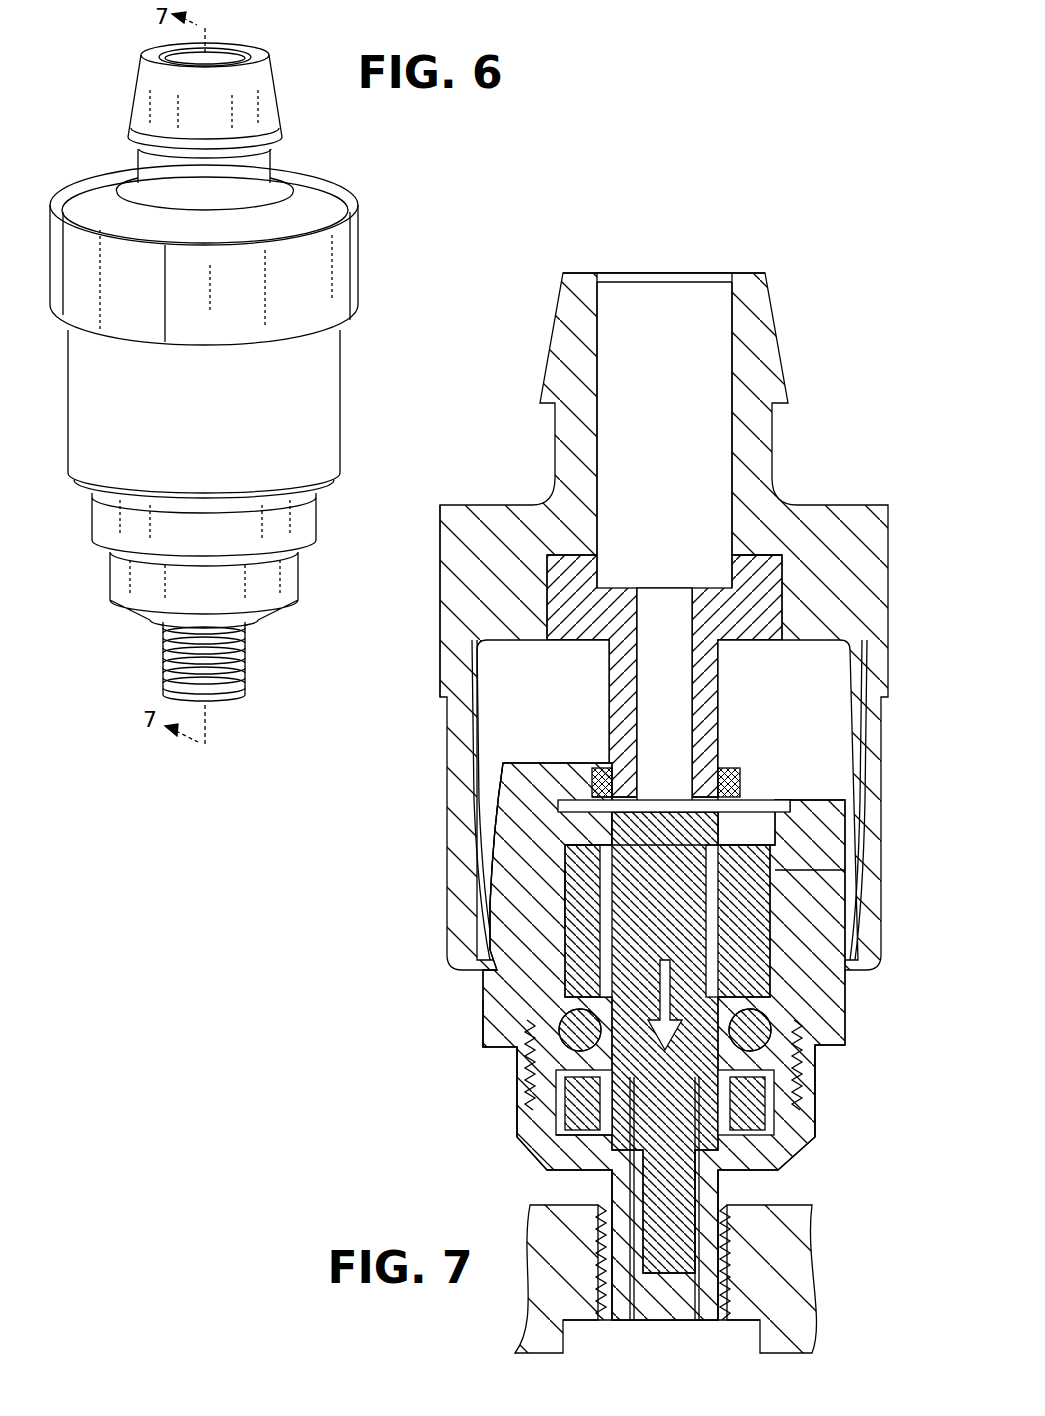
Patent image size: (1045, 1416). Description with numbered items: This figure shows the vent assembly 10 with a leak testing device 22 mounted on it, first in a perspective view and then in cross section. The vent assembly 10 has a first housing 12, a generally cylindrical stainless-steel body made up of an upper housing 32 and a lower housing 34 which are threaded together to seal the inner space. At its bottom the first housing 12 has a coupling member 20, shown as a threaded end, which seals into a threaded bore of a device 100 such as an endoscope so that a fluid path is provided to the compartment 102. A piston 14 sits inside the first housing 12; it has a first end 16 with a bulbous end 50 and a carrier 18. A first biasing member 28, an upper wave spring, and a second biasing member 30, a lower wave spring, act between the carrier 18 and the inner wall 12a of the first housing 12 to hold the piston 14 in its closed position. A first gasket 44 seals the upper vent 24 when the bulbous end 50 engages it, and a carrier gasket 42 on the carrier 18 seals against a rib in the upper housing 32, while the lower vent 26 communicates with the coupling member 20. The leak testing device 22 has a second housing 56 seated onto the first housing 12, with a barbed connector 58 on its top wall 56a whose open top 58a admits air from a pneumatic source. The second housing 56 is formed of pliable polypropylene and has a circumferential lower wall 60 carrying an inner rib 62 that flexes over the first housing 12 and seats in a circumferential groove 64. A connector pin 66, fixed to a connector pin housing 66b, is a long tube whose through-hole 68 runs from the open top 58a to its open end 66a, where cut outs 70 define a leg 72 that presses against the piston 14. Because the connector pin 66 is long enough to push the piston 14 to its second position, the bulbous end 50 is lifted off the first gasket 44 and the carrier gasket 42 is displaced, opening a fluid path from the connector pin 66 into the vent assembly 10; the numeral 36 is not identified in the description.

In FIG. 6, the vent assembly 10 is at (304, 611).
In FIG. 7, the vent assembly 10 is at (471, 1071).
In FIG. 7, the first housing 12 is at (867, 988).
In FIG. 7, the inner wall 12a is at (502, 900).
In FIG. 7, the piston 14 is at (790, 920).
In FIG. 7, the first end 16 is at (780, 870).
In FIG. 7, the carrier 18 is at (580, 1110).
In FIG. 6, the coupling member 20 is at (150, 653).
In FIG. 7, the coupling member 20 is at (752, 1218).
In FIG. 6, the leak testing device 22 is at (380, 184).
In FIG. 7, the leak testing device 22 is at (865, 303).
In FIG. 7, the upper vent 24 is at (600, 760).
In FIG. 7, the lower vent 26 is at (555, 1035).
In FIG. 7, the first biasing member 28 is at (500, 975).
In FIG. 7, the second biasing member 30 is at (805, 1065).
In FIG. 7, the upper housing 32 is at (800, 850).
In FIG. 7, the lower housing 34 is at (818, 1110).
In FIG. 7, the tube 36 is at (640, 1173).
In FIG. 7, the carrier gasket 42 is at (560, 1075).
In FIG. 7, the first gasket 44 is at (600, 765).
In FIG. 7, the bulbous end 50 is at (560, 808).
In FIG. 7, the second housing 56 is at (775, 490).
In FIG. 6, the top wall 56a is at (90, 190).
In FIG. 7, the top wall 56a is at (490, 503).
In FIG. 6, the connector 58 is at (131, 92).
In FIG. 7, the connector 58 is at (788, 340).
In FIG. 7, the open top 58a is at (663, 272).
In FIG. 6, the circumferential lower wall 60 is at (335, 388).
In FIG. 7, the circumferential lower wall 60 is at (881, 735).
In FIG. 7, the inner rib 62 is at (470, 935).
In FIG. 7, the circumferential groove 64 is at (508, 1005).
In FIG. 7, the connector pin 66 is at (718, 697).
In FIG. 7, the open end 66a is at (718, 746).
In FIG. 7, the connector pin housing 66b is at (800, 575).
In FIG. 7, the through-hole 68 is at (712, 665).
In FIG. 7, the cut outs 70 is at (830, 800).
In FIG. 7, the leg 72 is at (565, 878).
In FIG. 7, the device 100 is at (782, 1262).
In FIG. 7, the compartment 102 is at (661, 1340).